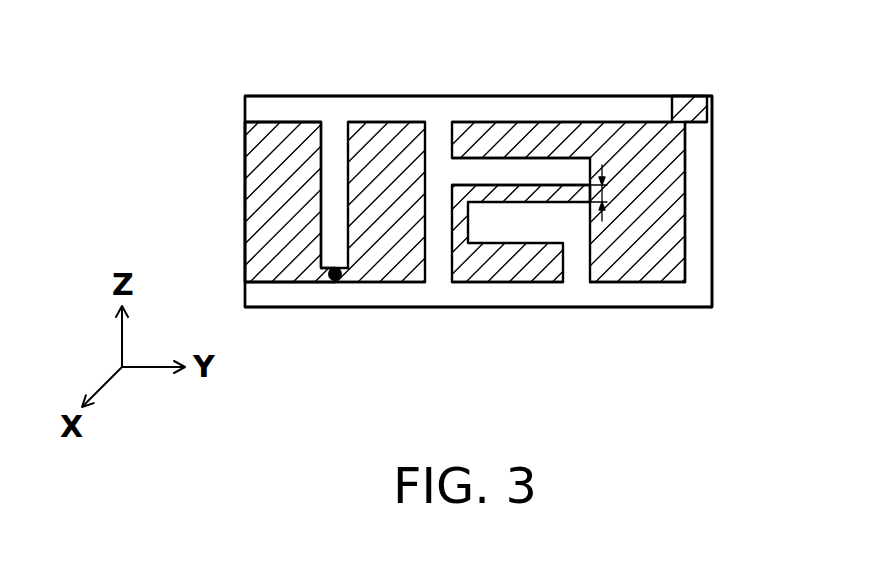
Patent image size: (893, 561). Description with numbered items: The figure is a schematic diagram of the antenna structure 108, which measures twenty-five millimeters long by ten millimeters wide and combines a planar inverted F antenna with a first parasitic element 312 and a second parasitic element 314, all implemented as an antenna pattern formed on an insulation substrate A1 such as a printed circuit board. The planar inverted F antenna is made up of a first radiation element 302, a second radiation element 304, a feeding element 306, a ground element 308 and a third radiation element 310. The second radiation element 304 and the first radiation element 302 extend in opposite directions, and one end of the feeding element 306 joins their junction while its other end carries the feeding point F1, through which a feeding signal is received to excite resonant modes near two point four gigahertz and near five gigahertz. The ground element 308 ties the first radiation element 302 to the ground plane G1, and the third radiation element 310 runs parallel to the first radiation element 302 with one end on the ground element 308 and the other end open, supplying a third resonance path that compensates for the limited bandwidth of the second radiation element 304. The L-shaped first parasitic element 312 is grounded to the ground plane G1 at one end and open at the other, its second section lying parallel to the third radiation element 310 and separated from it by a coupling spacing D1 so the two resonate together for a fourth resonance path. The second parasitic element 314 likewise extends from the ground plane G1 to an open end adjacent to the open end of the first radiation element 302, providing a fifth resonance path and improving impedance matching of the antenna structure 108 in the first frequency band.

The antenna structure 108 is at (790, 372).
The first radiation element 302 is at (546, 107).
The second radiation element 304 is at (289, 107).
The feeding element 306 is at (330, 215).
The ground element 308 is at (430, 232).
The third radiation element 310 is at (485, 170).
The first parasitic element 312 is at (583, 250).
The second parasitic element 314 is at (703, 212).
The insulation substrate A1 is at (257, 193).
The feeding point F1 is at (335, 281).
The ground plane G1 is at (537, 310).
The coupling spacing D1 is at (615, 193).